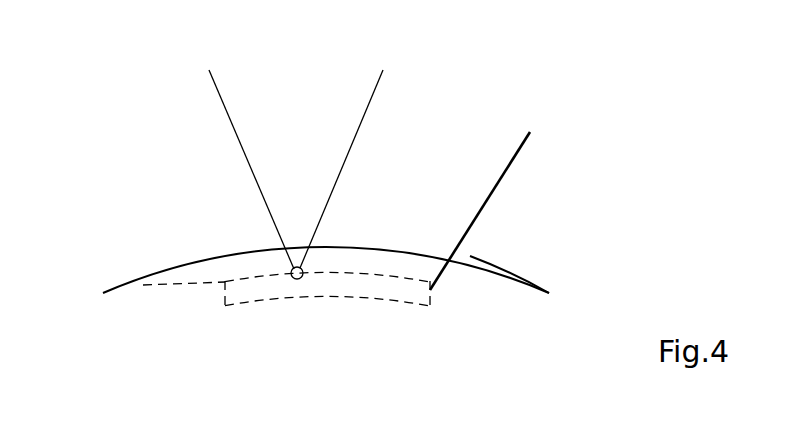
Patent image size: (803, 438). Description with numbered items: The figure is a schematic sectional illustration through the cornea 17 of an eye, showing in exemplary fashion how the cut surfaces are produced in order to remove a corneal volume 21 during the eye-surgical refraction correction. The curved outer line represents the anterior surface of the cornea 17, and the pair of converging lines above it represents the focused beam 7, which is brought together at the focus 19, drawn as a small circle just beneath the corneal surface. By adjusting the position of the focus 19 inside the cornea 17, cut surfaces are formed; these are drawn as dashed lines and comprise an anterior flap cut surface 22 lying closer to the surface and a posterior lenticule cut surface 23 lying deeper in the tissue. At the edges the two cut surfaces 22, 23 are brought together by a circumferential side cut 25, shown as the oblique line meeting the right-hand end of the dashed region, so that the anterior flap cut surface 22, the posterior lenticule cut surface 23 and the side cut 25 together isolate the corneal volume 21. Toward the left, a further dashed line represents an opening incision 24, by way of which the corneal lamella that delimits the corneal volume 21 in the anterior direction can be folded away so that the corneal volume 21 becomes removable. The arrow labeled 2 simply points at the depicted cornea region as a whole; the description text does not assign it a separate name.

The optical element / lens body 2 is at (163, 197).
The focused beam 7 is at (362, 127).
The cornea 17 is at (480, 265).
The focus 19 is at (295, 280).
The corneal volume 21 is at (417, 297).
The anterior flap cut surface 22 is at (372, 273).
The posterior lenticule cut surface 23 is at (345, 303).
The opening incision 24 is at (185, 288).
The circumferential side cut 25 is at (508, 205).